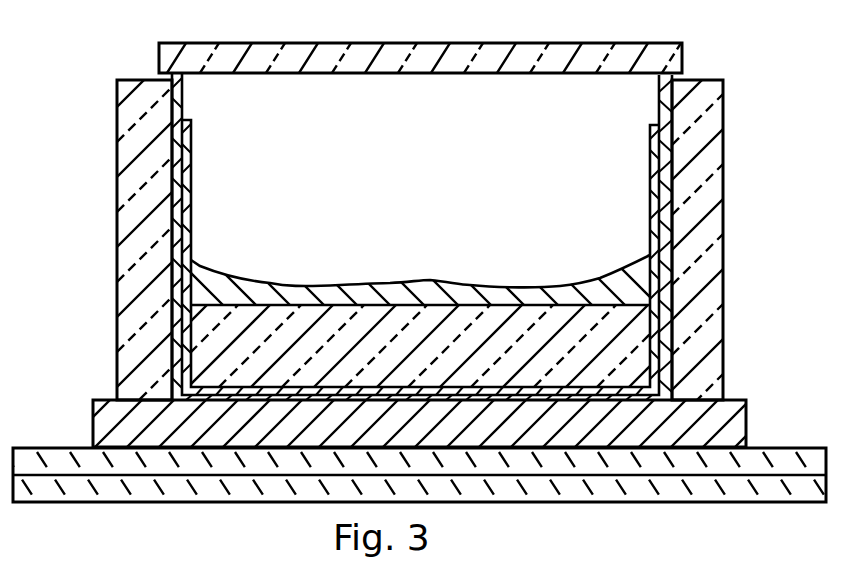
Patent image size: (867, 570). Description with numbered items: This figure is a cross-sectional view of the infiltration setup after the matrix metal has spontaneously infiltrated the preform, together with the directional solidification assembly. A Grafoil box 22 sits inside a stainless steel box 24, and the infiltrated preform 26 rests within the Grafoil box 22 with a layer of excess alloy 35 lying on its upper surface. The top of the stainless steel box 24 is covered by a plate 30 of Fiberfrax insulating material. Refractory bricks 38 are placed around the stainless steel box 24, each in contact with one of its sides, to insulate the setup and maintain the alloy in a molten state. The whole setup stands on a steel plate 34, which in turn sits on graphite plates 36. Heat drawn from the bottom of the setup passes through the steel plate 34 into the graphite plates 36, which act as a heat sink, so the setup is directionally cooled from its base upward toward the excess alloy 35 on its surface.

The plate 30 is at (603, 43).
The refractory brick 38 is at (117, 113).
The stainless steel box 24 is at (184, 109).
The Grafoil box 22 is at (650, 128).
The preform 26 is at (203, 342).
The excess alloy 35 is at (307, 284).
The steel plate 34 is at (749, 421).
The graphite plate 36 is at (13, 462).